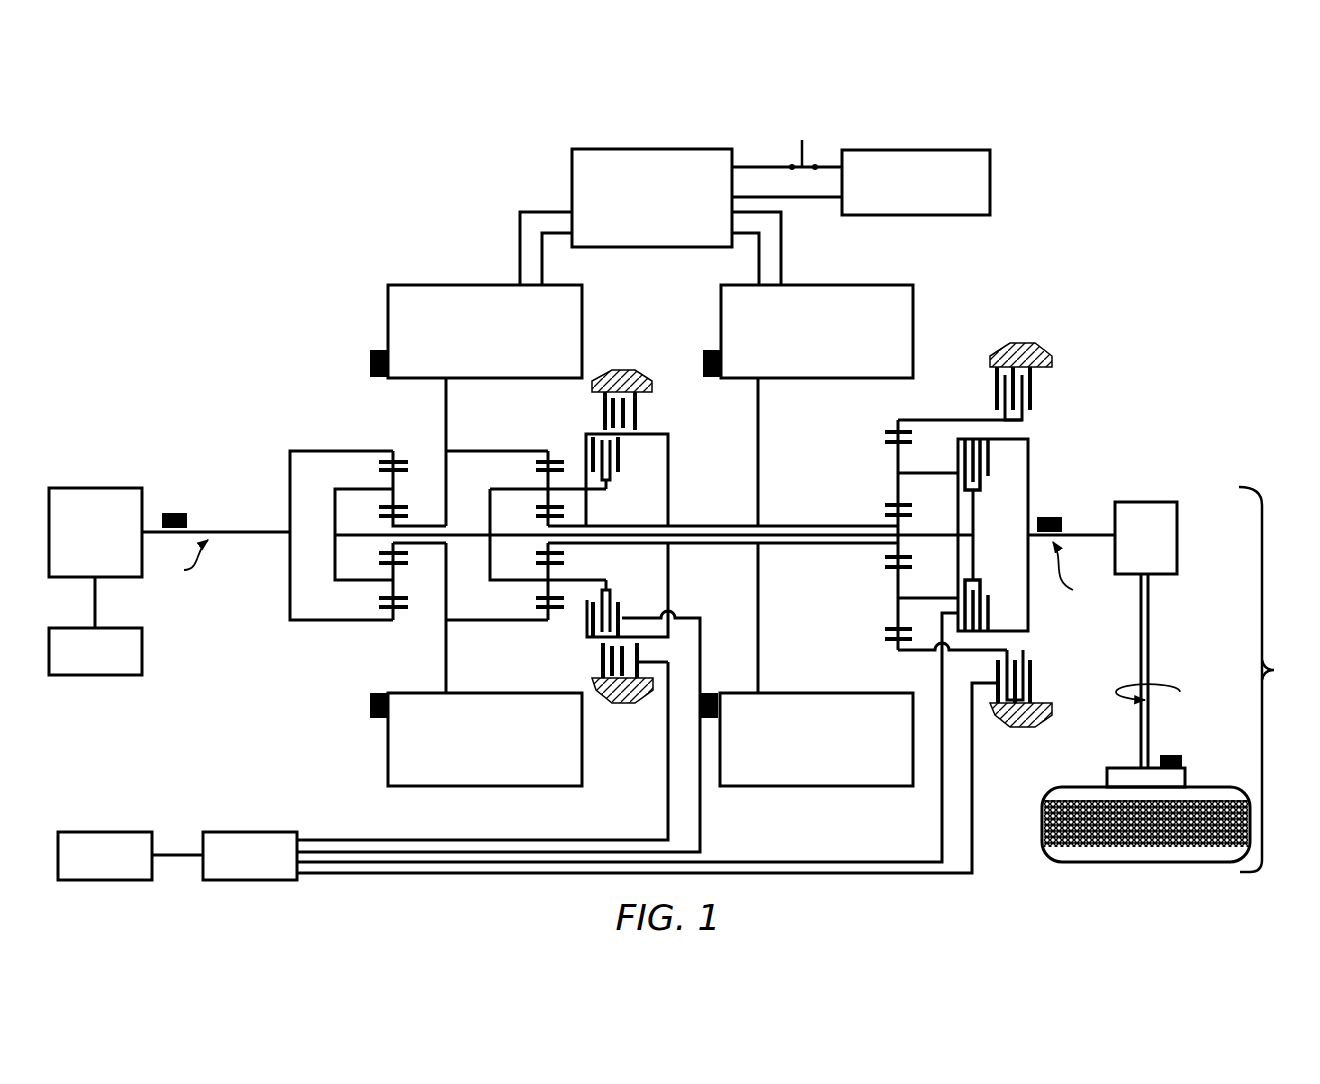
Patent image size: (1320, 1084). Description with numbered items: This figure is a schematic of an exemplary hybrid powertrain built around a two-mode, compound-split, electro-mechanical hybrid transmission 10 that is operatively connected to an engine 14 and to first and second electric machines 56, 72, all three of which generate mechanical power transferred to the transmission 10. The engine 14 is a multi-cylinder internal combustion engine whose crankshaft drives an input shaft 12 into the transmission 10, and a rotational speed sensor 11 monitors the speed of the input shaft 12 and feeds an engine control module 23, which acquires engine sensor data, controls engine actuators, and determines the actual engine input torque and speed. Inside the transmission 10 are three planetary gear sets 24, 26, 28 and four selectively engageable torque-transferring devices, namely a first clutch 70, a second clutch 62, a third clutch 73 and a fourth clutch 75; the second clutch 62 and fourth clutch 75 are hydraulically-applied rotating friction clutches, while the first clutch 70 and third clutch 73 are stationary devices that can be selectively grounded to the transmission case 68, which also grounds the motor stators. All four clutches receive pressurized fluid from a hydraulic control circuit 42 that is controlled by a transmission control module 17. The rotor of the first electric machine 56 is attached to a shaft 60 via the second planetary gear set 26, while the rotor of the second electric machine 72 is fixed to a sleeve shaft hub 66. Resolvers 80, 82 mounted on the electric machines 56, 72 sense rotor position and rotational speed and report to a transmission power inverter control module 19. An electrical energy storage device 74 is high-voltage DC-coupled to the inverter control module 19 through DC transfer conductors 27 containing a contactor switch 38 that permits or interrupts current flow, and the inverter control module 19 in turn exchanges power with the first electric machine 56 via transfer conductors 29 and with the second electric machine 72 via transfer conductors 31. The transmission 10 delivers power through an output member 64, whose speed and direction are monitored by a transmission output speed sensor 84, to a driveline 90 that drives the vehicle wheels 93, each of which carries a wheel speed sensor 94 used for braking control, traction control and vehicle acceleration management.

The electro-mechanical hybrid transmission 10 is at (348, 248).
The rotational speed sensor 11 is at (175, 511).
The input shaft 12 is at (250, 530).
The engine 14 is at (100, 487).
The transmission control module 17 is at (95, 831).
The transmission power inverter control module 19 is at (570, 167).
The engine control module 23 is at (140, 668).
The first planetary gear set 24 is at (386, 446).
The second planetary gear set 26 is at (543, 446).
The DC transfer conductors 27 is at (747, 164).
The third planetary gear set 28 is at (891, 418).
The transfer conductors 29 is at (518, 247).
The transfer conductors 31 is at (783, 240).
The contactor switch 38 is at (803, 152).
The hydraulic control circuit 42 is at (218, 831).
The first electric machine 56 is at (386, 308).
The shaft 60 is at (948, 532).
The clutch C2 62 is at (993, 479).
The output member 64 is at (1083, 532).
The sleeve shaft hub 66 is at (795, 524).
The transmission case 68 is at (622, 370).
The clutch C1 70 is at (988, 372).
The second electric machine 72 is at (915, 302).
The clutch C3 73 is at (645, 410).
The electrical energy storage device 74 is at (992, 168).
The clutch C4 75 is at (626, 481).
The resolver 80 is at (368, 362).
The resolver 82 is at (709, 350).
The transmission output speed sensor 84 is at (1050, 515).
The driveline 90 is at (1274, 670).
The vehicle wheel 93 is at (1105, 778).
The wheel speed sensor 94 is at (1175, 754).